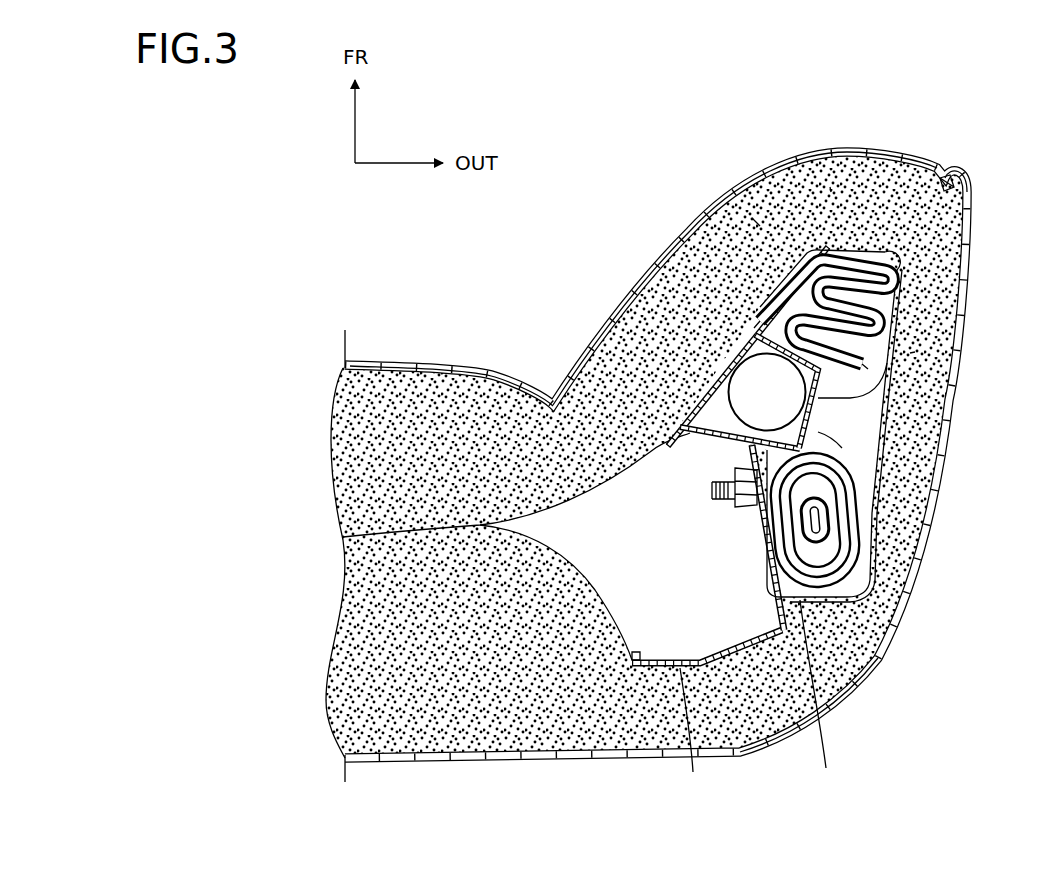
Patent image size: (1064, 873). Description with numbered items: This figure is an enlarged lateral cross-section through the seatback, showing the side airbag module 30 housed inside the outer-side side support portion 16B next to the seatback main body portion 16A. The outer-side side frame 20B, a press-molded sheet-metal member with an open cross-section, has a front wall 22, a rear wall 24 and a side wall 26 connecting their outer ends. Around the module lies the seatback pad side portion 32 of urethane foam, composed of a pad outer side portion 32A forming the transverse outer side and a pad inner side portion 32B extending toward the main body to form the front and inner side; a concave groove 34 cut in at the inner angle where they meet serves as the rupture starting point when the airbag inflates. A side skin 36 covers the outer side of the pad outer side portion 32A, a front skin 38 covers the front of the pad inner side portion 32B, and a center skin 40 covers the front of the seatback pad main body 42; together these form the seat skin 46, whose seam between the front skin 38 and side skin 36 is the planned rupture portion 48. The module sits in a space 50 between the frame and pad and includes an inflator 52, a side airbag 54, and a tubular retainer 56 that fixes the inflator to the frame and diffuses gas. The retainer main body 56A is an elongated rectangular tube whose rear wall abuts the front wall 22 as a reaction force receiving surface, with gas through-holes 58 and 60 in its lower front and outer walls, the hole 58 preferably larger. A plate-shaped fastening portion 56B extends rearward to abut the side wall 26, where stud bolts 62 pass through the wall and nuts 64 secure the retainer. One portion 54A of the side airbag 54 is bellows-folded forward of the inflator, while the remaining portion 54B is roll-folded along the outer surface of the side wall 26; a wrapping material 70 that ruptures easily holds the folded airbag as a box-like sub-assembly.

The seatback main body portion 16A is at (382, 320).
The outer-side side support portion 16B is at (870, 120).
The outer-side side frame 20B is at (658, 648).
The front wall 22 is at (696, 448).
The rear wall 24 is at (691, 733).
The side wall 26 is at (822, 697).
The side airbag module 30 is at (862, 254).
The seatback pad side portion 32 is at (830, 187).
The pad outer side portion 32A is at (915, 352).
The pad inner side portion 32B is at (752, 218).
The concave groove 34 is at (897, 262).
The side skin 36 is at (860, 428).
The front skin 38 is at (782, 158).
The center skin 40 is at (447, 366).
The seatback pad main body 42 is at (491, 395).
The seat skin 46 is at (580, 326).
The planned rupture portion 48 is at (954, 165).
The space 50 is at (842, 448).
The inflator 52 is at (755, 334).
The side airbag 54 is at (876, 513).
The one portion of the side airbag 54A is at (888, 331).
The remaining portion of the side airbag 54B is at (892, 607).
The tubular retainer 56 is at (708, 378).
The retainer main body 56A is at (884, 388).
The fastening portion 56B is at (766, 553).
The gas through-hole 58 is at (780, 338).
The gas through-hole 60 is at (882, 492).
The stud bolt 62 is at (712, 492).
The nut 64 is at (742, 510).
The wrapping material 70 is at (847, 630).